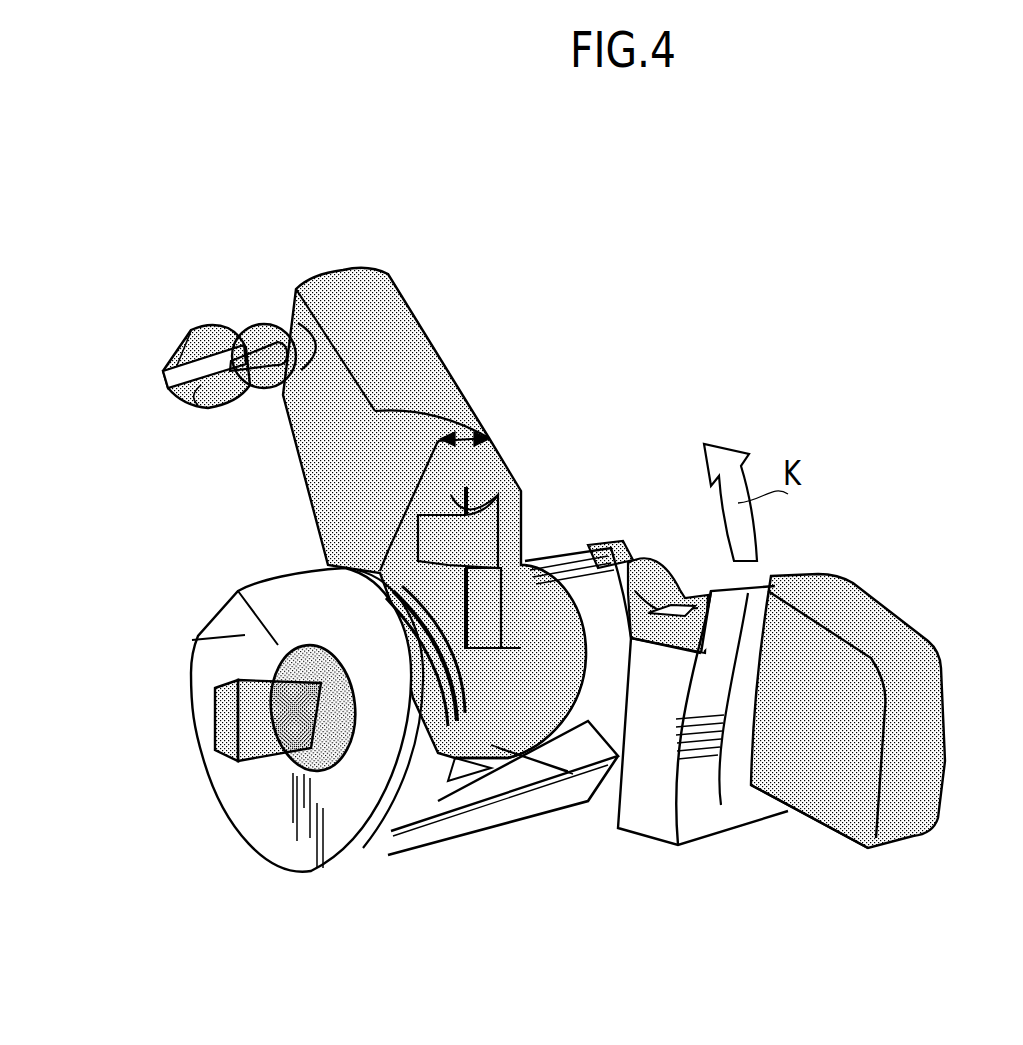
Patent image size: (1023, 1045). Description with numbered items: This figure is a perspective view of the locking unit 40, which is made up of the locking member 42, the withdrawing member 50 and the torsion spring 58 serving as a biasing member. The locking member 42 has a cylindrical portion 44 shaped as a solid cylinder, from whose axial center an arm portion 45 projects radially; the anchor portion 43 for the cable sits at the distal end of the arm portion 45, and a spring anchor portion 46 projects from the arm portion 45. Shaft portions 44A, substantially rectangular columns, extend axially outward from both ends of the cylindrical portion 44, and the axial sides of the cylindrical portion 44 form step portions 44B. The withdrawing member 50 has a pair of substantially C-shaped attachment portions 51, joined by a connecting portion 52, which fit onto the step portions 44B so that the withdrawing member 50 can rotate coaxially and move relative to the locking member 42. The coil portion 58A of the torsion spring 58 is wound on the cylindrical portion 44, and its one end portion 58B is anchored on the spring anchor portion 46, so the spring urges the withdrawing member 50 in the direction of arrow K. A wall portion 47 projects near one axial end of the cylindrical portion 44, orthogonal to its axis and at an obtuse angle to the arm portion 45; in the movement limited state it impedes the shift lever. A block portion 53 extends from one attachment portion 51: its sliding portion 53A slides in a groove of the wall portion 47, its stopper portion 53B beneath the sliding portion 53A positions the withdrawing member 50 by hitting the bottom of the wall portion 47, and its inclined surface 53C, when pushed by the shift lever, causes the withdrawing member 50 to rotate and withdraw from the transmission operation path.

The locking unit 40 is at (810, 195).
The locking member 42 is at (893, 577).
The anchor portion 43 is at (209, 325).
The cylindrical portion 44 is at (527, 697).
The shaft portions 44A is at (253, 742).
The step portions 44B is at (303, 638).
The arm portion 45 is at (412, 340).
The spring anchor portion 46 is at (447, 485).
The wall portion 47 is at (836, 680).
The withdrawing member 50 is at (487, 838).
The attachment portions 51 is at (275, 578).
The connecting portion 52 is at (443, 822).
The block portion 53 is at (717, 800).
The sliding portion 53A is at (753, 797).
The stopper portion 53B is at (771, 790).
The inclined surface 53C is at (663, 805).
The torsion spring 58 is at (470, 617).
The coil portion 58A is at (417, 675).
The one end portion 58B is at (463, 492).